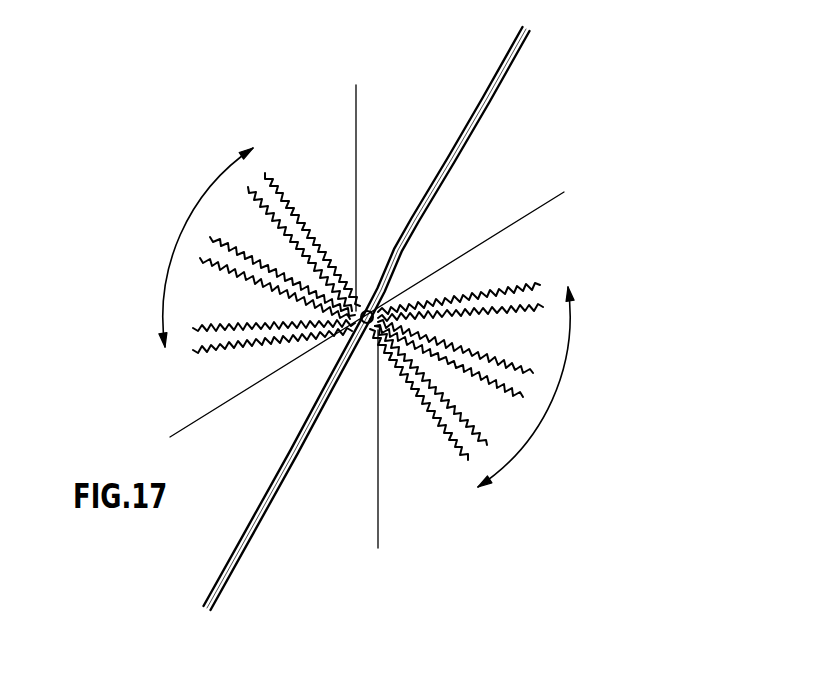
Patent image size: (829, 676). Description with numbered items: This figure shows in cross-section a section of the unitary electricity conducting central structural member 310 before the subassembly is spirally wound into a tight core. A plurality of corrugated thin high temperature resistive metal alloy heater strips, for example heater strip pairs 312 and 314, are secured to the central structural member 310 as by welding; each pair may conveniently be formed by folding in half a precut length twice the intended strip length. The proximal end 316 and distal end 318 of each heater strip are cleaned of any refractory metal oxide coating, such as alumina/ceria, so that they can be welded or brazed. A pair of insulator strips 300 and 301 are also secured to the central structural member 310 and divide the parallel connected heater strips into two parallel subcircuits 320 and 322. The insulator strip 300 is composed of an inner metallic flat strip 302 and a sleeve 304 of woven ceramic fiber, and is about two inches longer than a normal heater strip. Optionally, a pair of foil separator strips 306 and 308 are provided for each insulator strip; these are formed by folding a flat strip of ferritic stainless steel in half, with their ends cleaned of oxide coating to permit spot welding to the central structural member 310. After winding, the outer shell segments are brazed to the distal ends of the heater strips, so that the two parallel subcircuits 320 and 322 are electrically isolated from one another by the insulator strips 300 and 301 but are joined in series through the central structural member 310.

The insulator strip 300 is at (420, 310).
The insulator strip 301 is at (240, 578).
The inner metallic flat strip 302 is at (511, 52).
The sleeve of woven ceramic fiber 304 is at (492, 98).
The foil separator strip 306 is at (356, 173).
The foil separator strip 308 is at (477, 240).
The central structural member 310 is at (315, 327).
The heater strip pair 312 is at (485, 303).
The heater strip pair 314 is at (272, 195).
The proximal end 316 is at (380, 328).
The distal end 318 is at (485, 443).
The parallel subcircuit 320 is at (557, 387).
The parallel subcircuit 322 is at (205, 200).